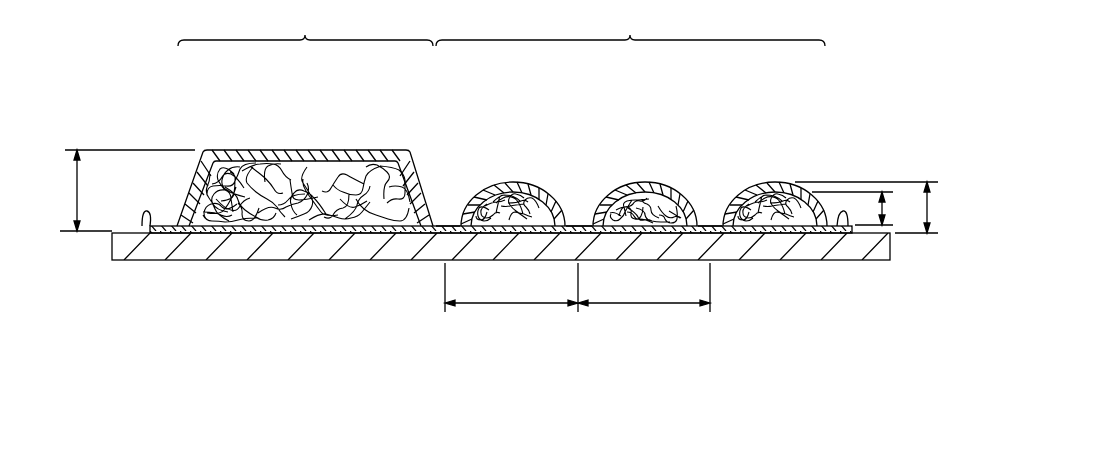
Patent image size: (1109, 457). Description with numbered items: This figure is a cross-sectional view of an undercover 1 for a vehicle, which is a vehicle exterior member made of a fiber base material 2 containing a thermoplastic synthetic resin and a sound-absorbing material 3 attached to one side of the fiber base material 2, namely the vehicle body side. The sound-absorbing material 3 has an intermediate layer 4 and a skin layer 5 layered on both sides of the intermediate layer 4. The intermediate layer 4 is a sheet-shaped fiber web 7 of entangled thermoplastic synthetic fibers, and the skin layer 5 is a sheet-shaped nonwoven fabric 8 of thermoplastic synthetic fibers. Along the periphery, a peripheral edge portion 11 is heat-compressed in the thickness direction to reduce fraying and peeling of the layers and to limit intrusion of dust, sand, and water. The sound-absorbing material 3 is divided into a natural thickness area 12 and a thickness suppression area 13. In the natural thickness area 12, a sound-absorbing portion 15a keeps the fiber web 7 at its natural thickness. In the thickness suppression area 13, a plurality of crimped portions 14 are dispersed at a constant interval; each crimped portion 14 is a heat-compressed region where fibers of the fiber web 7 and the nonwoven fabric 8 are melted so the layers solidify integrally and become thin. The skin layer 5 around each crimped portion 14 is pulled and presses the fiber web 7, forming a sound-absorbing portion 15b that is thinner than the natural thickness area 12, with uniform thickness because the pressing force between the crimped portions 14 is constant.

The undercover 1 is at (150, 68).
The fiber base material 2 is at (348, 260).
The sound-absorbing material 3 is at (285, 147).
The intermediate layer 4 is at (252, 228).
The skin layer 5 is at (494, 221).
The fiber web 7 is at (644, 163).
The nonwoven fabric 8 is at (494, 221).
The peripheral edge portion 11 is at (143, 226).
The natural thickness area 12 is at (305, 24).
The thickness suppression area 13 is at (630, 24).
The crimped portion 14 is at (445, 224).
The sound-absorbing portion 15a is at (262, 170).
The sound-absorbing portion 15b is at (490, 213).